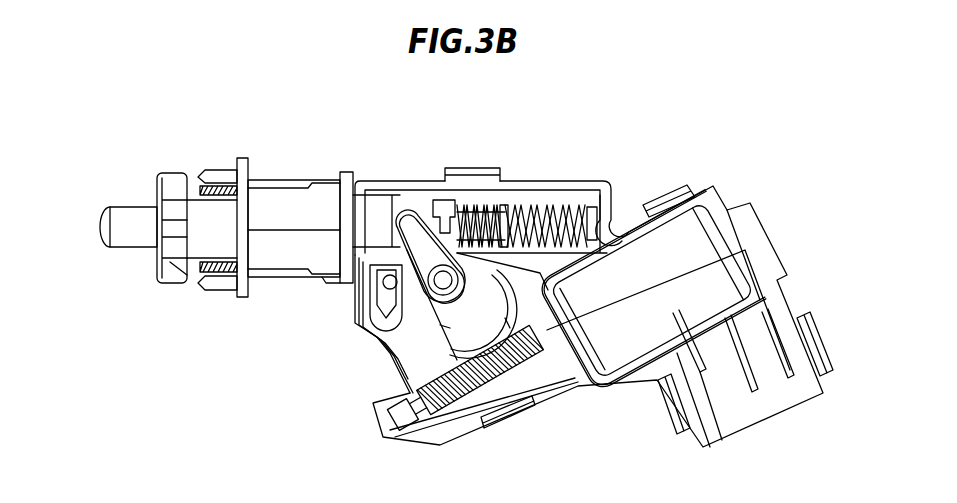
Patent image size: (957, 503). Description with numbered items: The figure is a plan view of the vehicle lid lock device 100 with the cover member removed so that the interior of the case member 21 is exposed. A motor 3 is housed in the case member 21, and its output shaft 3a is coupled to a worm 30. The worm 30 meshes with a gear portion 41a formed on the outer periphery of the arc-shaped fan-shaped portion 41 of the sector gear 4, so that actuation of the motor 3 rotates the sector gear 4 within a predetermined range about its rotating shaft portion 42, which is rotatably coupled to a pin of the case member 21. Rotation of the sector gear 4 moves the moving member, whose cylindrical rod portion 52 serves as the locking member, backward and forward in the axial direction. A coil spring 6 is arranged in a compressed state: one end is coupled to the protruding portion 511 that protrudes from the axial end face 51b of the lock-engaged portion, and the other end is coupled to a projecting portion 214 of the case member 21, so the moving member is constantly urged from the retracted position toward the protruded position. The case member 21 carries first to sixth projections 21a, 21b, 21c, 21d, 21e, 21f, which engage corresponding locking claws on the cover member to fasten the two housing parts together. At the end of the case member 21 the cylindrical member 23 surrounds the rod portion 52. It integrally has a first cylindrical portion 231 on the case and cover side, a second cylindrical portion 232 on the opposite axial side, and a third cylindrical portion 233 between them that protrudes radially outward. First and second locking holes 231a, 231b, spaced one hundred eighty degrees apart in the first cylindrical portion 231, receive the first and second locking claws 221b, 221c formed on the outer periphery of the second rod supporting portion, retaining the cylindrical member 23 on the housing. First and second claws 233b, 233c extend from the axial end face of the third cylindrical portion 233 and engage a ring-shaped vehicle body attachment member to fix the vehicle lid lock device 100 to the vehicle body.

The vehicle lid lock device 100 is at (118, 105).
The motor 3 is at (690, 237).
The output shaft 3a is at (403, 413).
The sector gear 4 is at (423, 313).
The coil spring 6 is at (571, 210).
The case member 21 is at (618, 178).
The first projection 21a is at (466, 170).
The second projection 21b is at (353, 302).
The third projection 21c is at (497, 428).
The fourth projection 21d is at (680, 422).
The fifth projection 21e is at (813, 347).
The sixth projection 21f is at (670, 186).
The cylindrical member 23 is at (162, 292).
The worm 30 is at (470, 400).
The fan-shaped portion 41 is at (448, 327).
The gear portion 41a is at (540, 380).
The rotating shaft portion 42 is at (441, 265).
The axial end face 51b is at (478, 198).
The rod portion 52 is at (130, 246).
The projecting portion 214 is at (598, 220).
The first locking claw 221b is at (342, 172).
The second locking claw 221c is at (330, 277).
The first cylindrical portion 231 is at (267, 188).
The first locking hole 231a is at (313, 183).
The second locking hole 231b is at (320, 272).
The second cylindrical portion 232 is at (180, 210).
The third cylindrical portion 233 is at (240, 163).
The first claw 233b is at (223, 173).
The second claw 233c is at (203, 283).
The protruding portion 511 is at (500, 197).